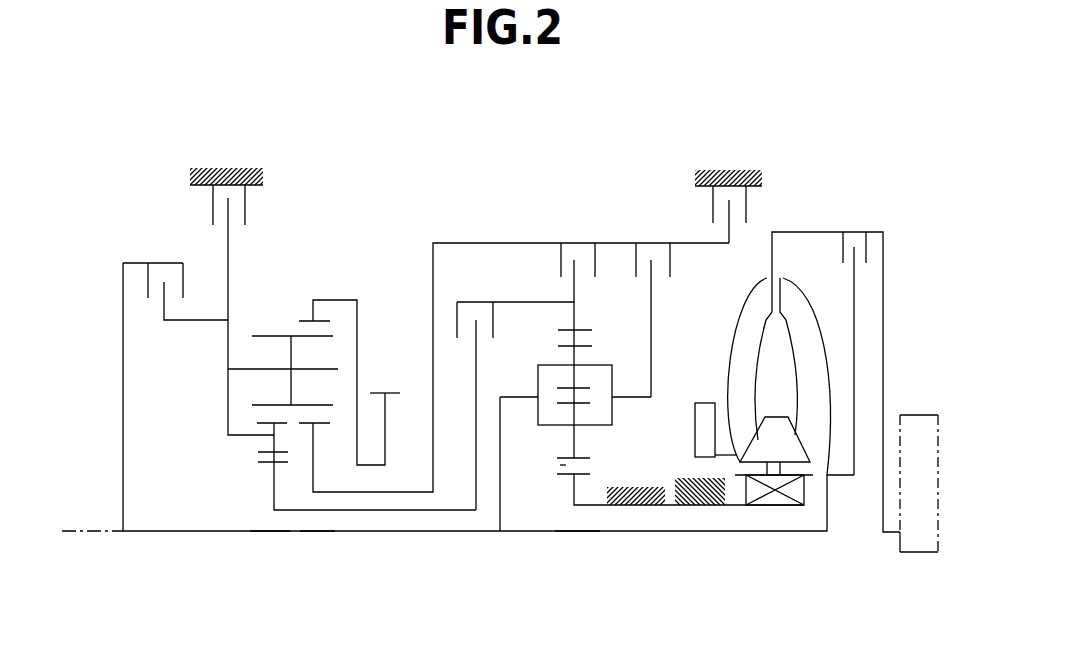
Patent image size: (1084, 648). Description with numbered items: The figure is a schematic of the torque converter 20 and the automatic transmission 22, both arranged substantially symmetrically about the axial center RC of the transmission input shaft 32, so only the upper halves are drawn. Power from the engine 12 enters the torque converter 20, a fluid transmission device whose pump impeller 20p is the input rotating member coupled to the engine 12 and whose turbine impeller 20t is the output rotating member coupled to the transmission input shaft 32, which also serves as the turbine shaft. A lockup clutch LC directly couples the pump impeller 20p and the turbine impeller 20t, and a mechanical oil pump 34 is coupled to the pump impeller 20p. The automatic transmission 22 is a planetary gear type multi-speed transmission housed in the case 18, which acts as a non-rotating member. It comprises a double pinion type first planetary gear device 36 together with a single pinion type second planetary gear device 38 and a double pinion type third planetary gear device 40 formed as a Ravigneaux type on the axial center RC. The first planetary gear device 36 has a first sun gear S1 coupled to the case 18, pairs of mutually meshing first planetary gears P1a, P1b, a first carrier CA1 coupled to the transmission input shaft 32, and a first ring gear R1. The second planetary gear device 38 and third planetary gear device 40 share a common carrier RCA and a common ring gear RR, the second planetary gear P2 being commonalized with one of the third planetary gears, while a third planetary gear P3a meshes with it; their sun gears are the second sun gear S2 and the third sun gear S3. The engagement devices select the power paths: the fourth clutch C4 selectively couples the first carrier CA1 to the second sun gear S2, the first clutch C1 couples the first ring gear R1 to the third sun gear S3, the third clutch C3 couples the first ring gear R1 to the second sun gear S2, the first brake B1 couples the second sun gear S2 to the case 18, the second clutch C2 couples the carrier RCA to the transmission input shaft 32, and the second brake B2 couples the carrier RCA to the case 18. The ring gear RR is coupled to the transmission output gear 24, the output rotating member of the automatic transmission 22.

The automatic transmission 22 is at (207, 150).
The case 18 is at (233, 170).
The second brake B2 is at (247, 205).
The second clutch C2 is at (188, 280).
The second planetary gear P2 is at (270, 336).
The carrier RCA is at (228, 387).
The ring gear RR is at (305, 320).
The transmission output gear 24 is at (392, 393).
The third planetary gear P3a is at (260, 423).
The third sun gear S3 is at (260, 457).
The second sun gear S2 is at (330, 424).
The first clutch C1 is at (515, 394).
The first carrier CA1 is at (522, 397).
The third clutch C3 is at (577, 339).
The fourth clutch C4 is at (653, 309).
The first ring gear R1 is at (580, 330).
The first planetary gear P1a is at (622, 340).
The first planetary gear P1b is at (612, 455).
The first sun gear S1 is at (565, 466).
The mechanical oil pump 34 is at (700, 428).
The torque converter 20 is at (833, 215).
The pump impeller 20p is at (735, 385).
The turbine impeller 20t is at (810, 358).
The lockup clutch LC is at (836, 247).
The first brake B1 is at (714, 214).
The engine 12 is at (912, 420).
The axial center RC is at (77, 531).
The third planetary gear device 40 is at (268, 545).
The second planetary gear device 38 is at (315, 545).
The first planetary gear device 36 is at (577, 545).
The transmission input shaft 32 is at (660, 533).